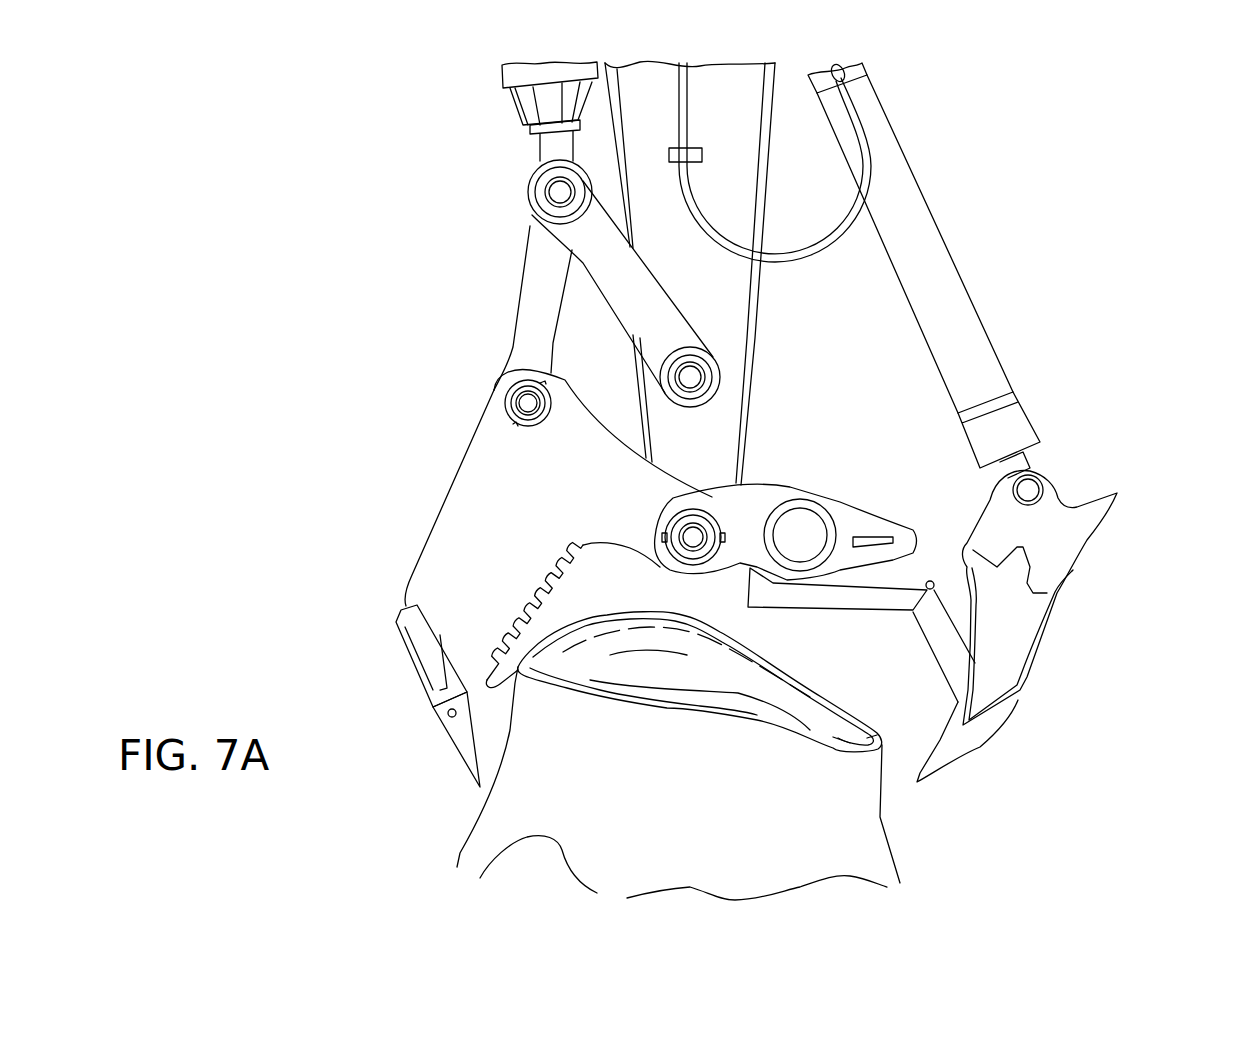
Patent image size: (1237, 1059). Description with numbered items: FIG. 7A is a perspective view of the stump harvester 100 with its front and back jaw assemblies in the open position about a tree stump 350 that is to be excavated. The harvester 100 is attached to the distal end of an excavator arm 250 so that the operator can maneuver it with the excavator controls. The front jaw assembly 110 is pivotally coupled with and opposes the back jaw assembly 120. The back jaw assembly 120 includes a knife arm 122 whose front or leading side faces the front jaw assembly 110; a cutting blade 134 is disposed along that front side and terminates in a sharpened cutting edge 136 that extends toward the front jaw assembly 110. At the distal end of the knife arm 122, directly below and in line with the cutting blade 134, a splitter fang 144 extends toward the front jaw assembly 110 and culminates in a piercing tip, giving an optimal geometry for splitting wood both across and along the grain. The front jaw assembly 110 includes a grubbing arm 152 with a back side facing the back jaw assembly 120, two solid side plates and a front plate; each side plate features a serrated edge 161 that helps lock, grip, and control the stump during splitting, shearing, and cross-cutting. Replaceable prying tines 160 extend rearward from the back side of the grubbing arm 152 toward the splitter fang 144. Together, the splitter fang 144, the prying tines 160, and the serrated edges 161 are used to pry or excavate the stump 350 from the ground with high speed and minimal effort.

The stump harvester 100 is at (316, 471).
The front jaw assembly 110 is at (375, 361).
The back jaw assembly 120 is at (1210, 552).
The knife arm 122 is at (913, 512).
The cutting blade 134 is at (942, 632).
The cutting edge 136 is at (775, 612).
The splitter fang 144 is at (955, 752).
The grubbing arm 152 is at (466, 517).
The prying tines 160 is at (457, 730).
The serrated edge 161 is at (577, 590).
The excavator arm 250 is at (727, 117).
The stump 350 is at (597, 707).